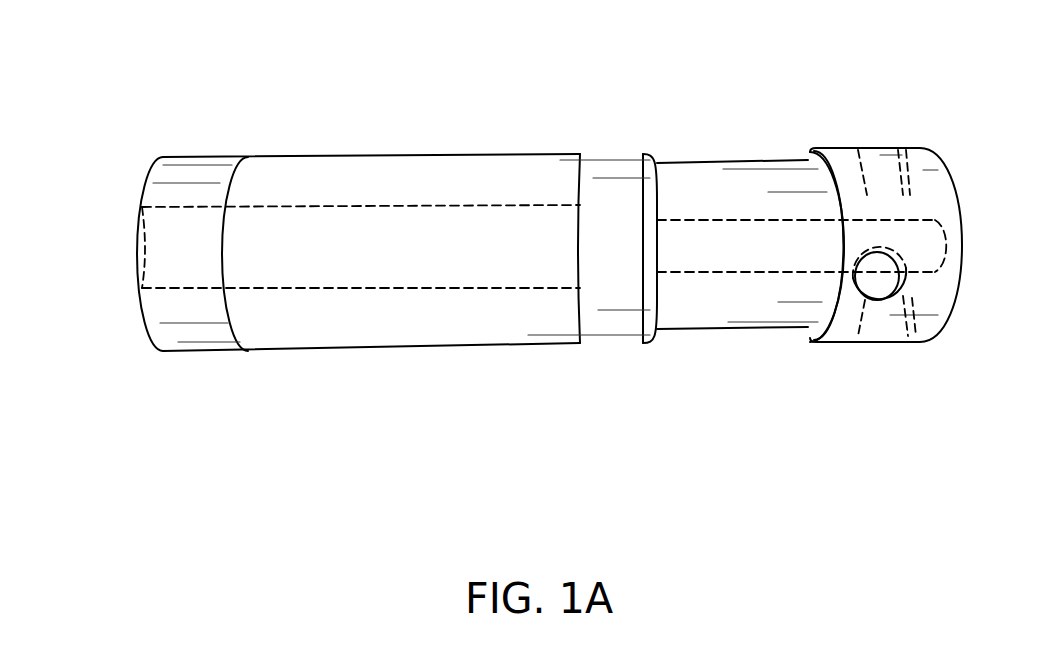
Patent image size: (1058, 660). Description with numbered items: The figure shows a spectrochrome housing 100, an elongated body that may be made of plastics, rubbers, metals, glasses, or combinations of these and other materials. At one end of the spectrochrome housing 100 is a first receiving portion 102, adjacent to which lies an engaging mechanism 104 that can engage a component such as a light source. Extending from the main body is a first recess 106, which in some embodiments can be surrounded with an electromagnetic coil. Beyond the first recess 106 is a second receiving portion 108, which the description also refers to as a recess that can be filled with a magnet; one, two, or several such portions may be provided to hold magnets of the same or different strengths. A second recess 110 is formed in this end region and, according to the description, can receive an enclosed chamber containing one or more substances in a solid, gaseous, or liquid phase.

The spectrochrome housing 100 is at (255, 426).
The first receiving portion 102 is at (145, 250).
The engaging mechanism 104 is at (218, 177).
The first recess 106 is at (670, 157).
The second receiving portion 108 is at (925, 218).
The second recess 110 is at (870, 278).